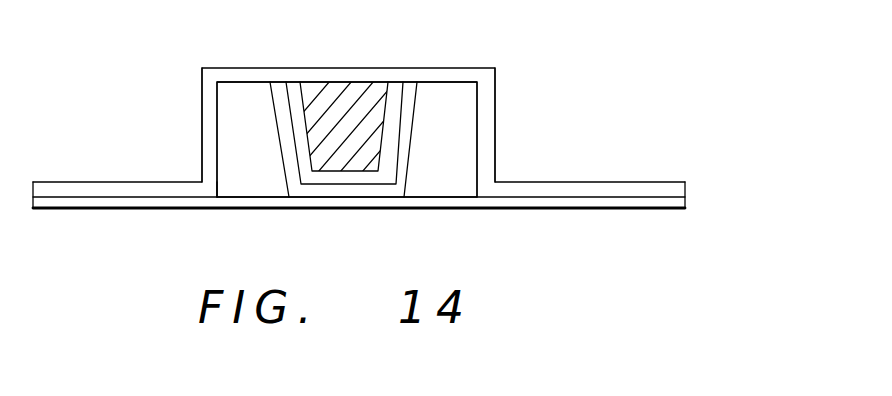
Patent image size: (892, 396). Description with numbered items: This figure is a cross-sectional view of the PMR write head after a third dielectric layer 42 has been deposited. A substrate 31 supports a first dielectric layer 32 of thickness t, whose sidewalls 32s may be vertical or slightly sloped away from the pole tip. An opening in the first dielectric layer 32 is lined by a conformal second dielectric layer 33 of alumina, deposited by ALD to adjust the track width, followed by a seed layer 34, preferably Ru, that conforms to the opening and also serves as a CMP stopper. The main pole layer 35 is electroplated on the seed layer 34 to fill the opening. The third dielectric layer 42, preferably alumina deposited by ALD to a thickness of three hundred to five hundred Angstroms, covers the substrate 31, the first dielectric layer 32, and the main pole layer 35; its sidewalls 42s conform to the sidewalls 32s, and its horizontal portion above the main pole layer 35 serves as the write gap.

The substrate 31 is at (665, 203).
The third dielectric layer 42 is at (650, 192).
The sidewalls of third dielectric layer 42s is at (202, 137).
The first dielectric layer 32 is at (230, 100).
The sidewalls of first dielectric layer 32s is at (215, 186).
The second dielectric layer 33 is at (415, 92).
The seed layer 34 is at (403, 92).
The main pole layer 35 is at (342, 105).